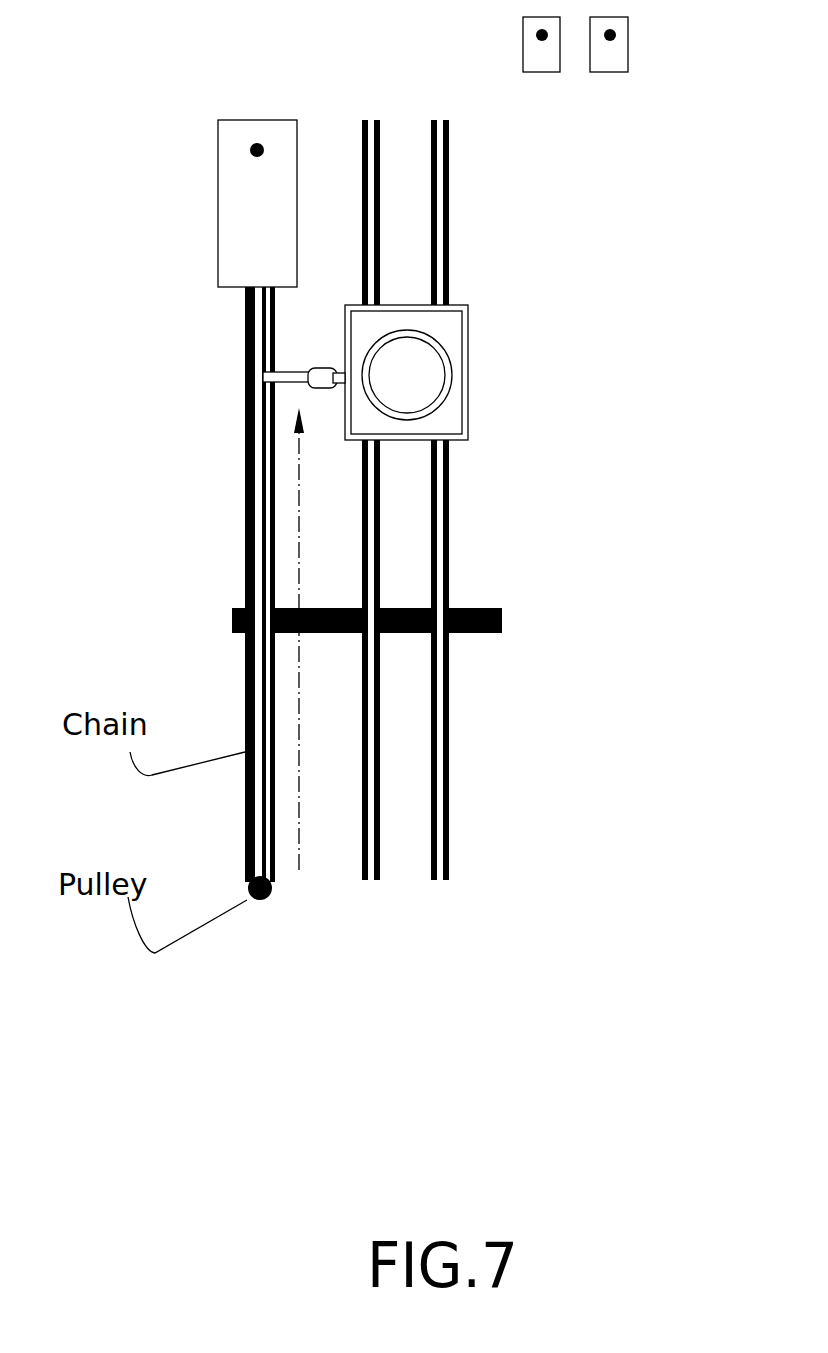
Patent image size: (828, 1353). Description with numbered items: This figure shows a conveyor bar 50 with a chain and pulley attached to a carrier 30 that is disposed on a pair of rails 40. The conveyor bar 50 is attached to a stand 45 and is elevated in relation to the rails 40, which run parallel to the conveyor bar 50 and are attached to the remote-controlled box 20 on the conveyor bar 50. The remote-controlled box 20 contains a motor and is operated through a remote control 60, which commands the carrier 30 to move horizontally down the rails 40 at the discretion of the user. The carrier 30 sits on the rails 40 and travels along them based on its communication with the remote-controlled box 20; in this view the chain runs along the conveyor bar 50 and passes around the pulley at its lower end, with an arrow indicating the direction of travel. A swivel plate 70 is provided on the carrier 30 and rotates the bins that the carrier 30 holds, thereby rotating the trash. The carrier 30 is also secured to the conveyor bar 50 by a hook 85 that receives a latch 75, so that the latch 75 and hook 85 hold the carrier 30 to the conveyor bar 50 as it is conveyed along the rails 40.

The remote-controlled box 20 is at (306, 166).
The carrier 30 is at (475, 342).
The pair of rails 40 is at (472, 500).
The stand for rails 45 is at (510, 618).
The conveyor bar 50 is at (201, 584).
The remote control 60 is at (629, 82).
The swivel plate 70 is at (463, 317).
The latch 75 is at (277, 363).
The hook 85 is at (310, 355).